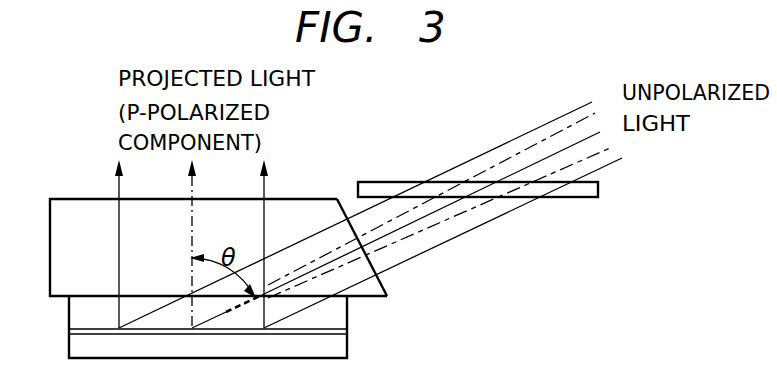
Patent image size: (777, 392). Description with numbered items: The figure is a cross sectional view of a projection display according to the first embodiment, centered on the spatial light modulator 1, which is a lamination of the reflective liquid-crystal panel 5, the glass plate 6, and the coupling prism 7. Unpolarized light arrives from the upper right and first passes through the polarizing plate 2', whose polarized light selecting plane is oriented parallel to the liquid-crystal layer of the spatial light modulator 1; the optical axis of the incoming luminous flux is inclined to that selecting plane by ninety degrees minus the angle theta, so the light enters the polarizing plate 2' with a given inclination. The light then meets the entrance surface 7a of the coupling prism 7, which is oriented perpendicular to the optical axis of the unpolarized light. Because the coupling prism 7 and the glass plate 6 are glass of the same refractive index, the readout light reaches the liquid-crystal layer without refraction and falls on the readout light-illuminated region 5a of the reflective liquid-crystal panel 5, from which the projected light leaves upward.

The spatial light modulator 1 is at (78, 192).
The polarizing plate 2' is at (478, 164).
The coupling prism 7 is at (294, 208).
The entrance surface 7a is at (385, 285).
The glass plate 6 is at (339, 318).
The reflective liquid-crystal panel 5 is at (352, 329).
The readout light-illuminated region 5a is at (87, 326).